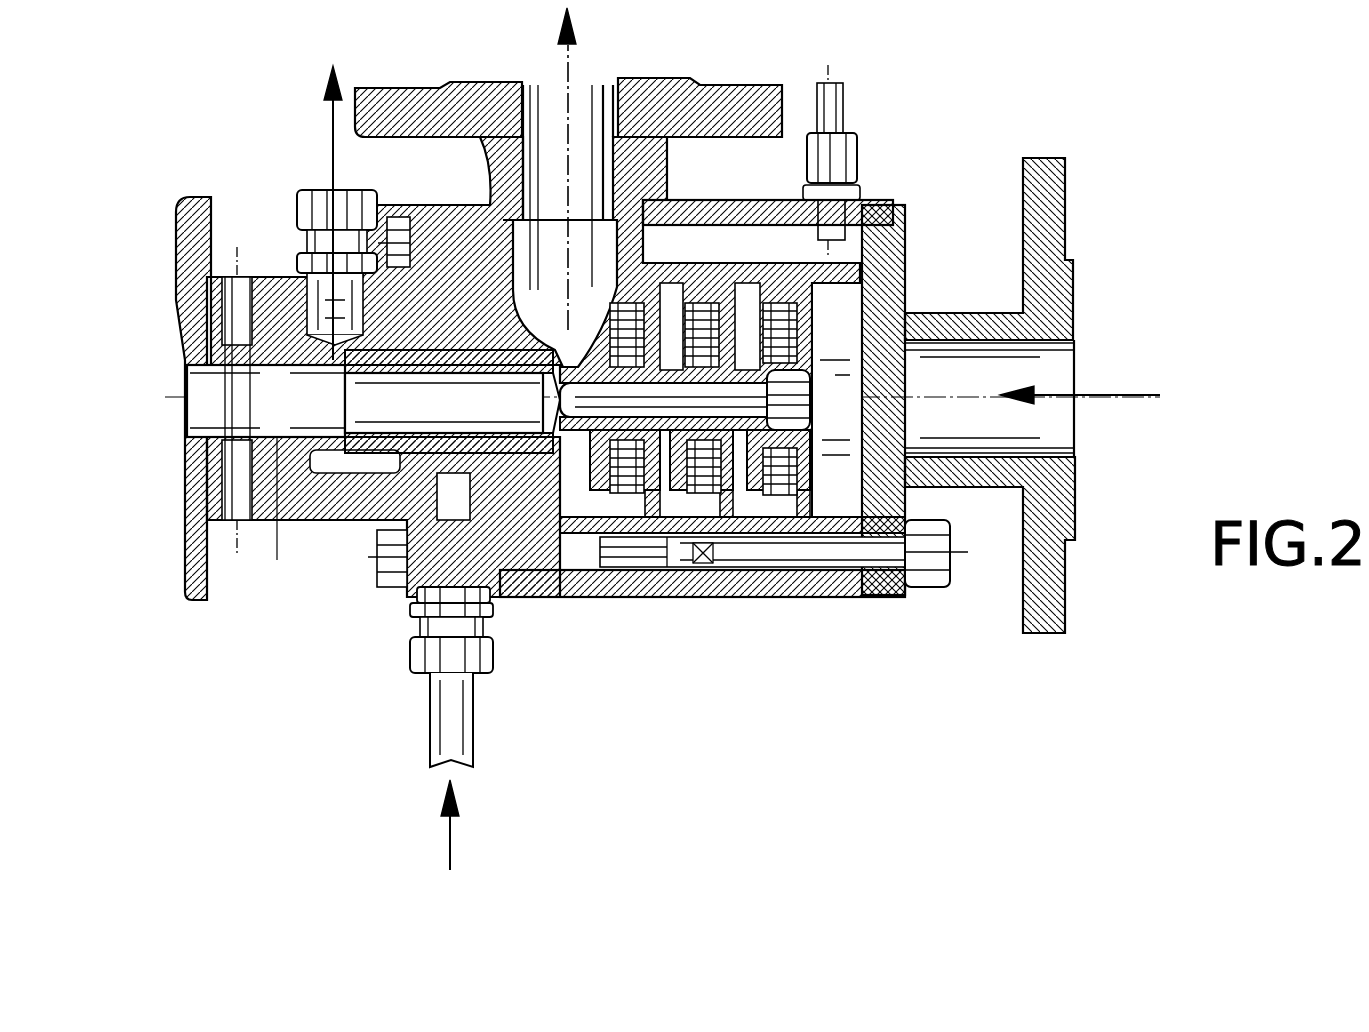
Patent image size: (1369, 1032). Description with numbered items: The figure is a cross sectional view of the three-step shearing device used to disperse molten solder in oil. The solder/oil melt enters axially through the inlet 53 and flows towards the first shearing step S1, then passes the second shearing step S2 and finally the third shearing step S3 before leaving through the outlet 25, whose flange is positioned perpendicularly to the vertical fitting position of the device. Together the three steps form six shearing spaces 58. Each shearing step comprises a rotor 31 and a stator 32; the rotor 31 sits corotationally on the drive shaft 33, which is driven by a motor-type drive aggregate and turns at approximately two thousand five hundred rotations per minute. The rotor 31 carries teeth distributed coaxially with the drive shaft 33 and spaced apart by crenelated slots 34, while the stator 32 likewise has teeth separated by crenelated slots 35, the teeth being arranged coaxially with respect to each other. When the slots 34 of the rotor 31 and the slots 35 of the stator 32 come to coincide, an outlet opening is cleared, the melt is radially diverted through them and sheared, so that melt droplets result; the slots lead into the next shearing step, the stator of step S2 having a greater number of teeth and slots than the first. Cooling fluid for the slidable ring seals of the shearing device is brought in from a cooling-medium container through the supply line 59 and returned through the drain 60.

The outlet 25 is at (584, 290).
The slots 34 is at (647, 115).
The shearing spaces 58 is at (743, 434).
The stator 32 is at (847, 270).
The rotor 31 is at (800, 392).
The inlet 53 is at (1047, 367).
The drain 60 is at (318, 195).
The supply line 59 is at (440, 725).
The drive shaft 33 is at (575, 440).
The slots 35 is at (640, 490).
The third shearing step S3 is at (663, 597).
The second shearing step S2 is at (747, 597).
The first shearing step S1 is at (823, 597).